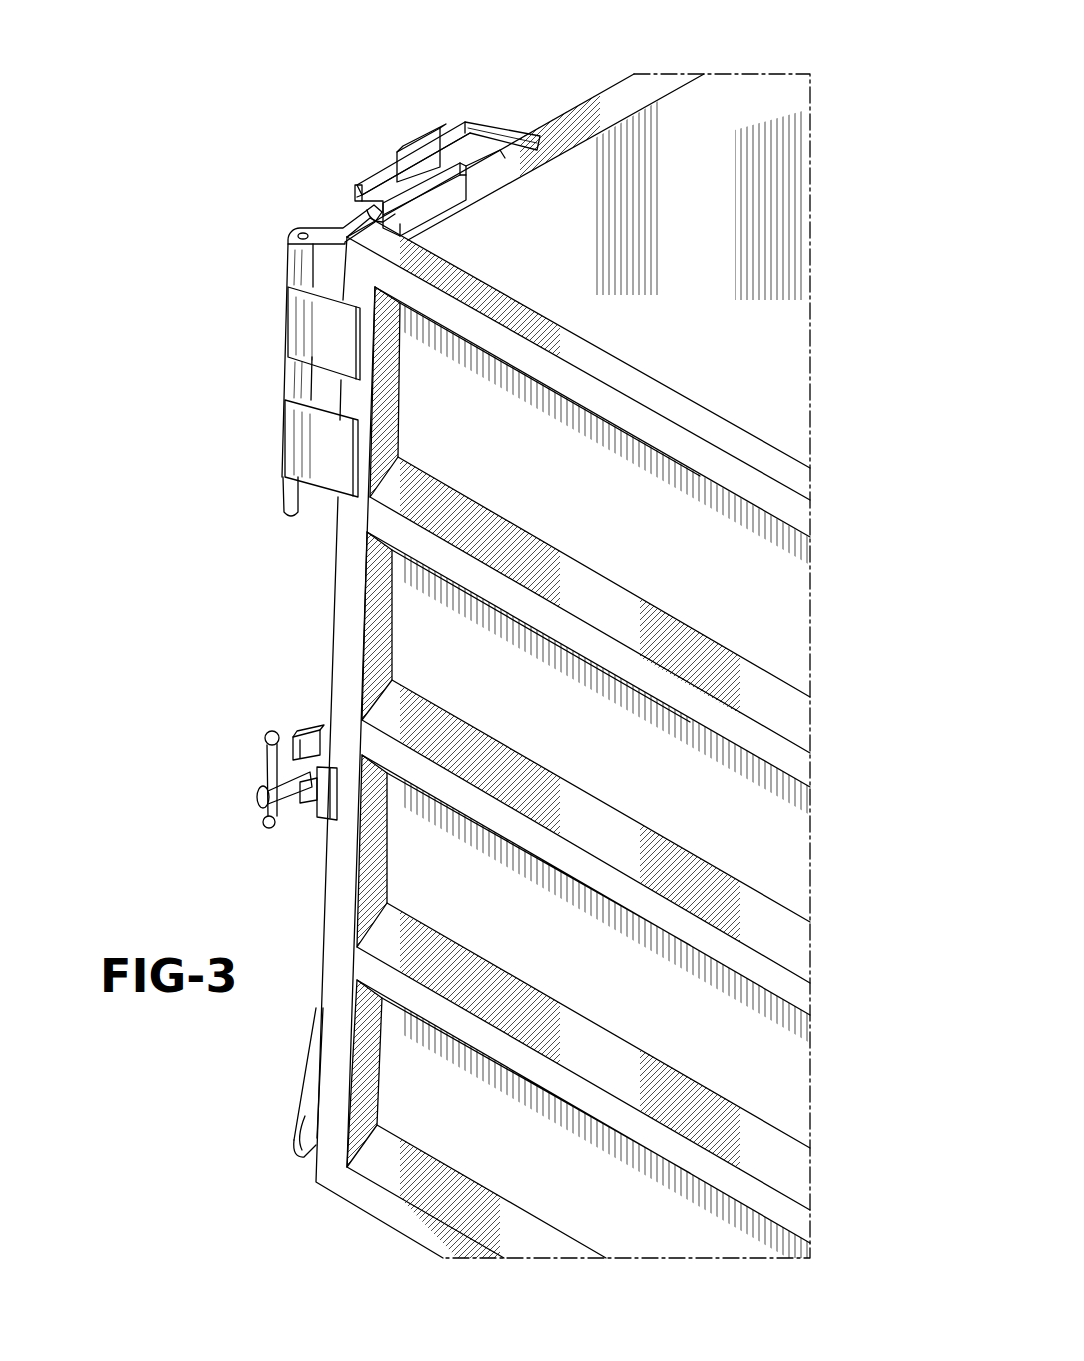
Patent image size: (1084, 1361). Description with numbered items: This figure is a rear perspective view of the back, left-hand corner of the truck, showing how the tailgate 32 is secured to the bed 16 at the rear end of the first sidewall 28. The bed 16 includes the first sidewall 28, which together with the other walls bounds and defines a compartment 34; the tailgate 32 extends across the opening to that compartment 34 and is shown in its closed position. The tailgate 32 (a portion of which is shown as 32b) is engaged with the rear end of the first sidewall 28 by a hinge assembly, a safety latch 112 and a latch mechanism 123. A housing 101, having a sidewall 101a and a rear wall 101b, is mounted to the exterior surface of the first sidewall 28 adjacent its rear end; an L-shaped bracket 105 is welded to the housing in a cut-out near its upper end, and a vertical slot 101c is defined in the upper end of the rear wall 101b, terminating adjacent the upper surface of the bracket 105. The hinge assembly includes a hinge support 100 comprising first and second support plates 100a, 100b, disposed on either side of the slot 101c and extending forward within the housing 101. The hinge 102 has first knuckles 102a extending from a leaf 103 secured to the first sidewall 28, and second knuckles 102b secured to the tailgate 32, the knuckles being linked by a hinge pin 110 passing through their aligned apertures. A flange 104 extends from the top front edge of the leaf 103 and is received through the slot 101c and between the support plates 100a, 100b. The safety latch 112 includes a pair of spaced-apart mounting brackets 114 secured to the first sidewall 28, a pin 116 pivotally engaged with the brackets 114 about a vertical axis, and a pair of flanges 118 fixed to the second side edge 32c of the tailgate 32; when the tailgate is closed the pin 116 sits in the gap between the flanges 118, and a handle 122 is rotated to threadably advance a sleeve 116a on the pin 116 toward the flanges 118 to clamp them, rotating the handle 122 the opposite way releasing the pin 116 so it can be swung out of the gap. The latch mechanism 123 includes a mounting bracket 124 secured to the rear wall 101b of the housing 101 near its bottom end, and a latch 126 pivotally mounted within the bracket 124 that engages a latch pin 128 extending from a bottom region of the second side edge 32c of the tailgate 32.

The bed 16 is at (578, 637).
The first sidewall 28 is at (567, 108).
The tailgate 32 is at (527, 738).
The top rail of gate 32b is at (683, 393).
The second side edge 32c is at (340, 583).
The compartment 34 is at (657, 356).
The hinge support 100 is at (433, 174).
The first support plate 100a is at (440, 180).
The second support plate 100b is at (420, 157).
The housing 101 is at (404, 163).
The sidewall 101a is at (440, 150).
The rear wall 101b is at (355, 197).
The vertical slot 101c is at (372, 214).
The hinge 102 is at (260, 370).
The first knuckles 102a is at (290, 253).
The second knuckles 102b is at (307, 327).
The leaf 103 is at (353, 213).
The flange 104 is at (403, 183).
The L-shaped bracket 105 is at (480, 152).
The hinge pin 110 is at (287, 497).
The safety latch 112 is at (301, 757).
The mounting brackets 114 is at (320, 735).
The pin 116 is at (315, 812).
The sleeve 116a is at (310, 777).
The flanges 118 is at (307, 737).
The handle 122 is at (262, 750).
The latch mechanism 123 is at (249, 1094).
The mounting bracket 124 is at (307, 1082).
The latch 126 is at (303, 1110).
The latch pin 128 is at (297, 1128).